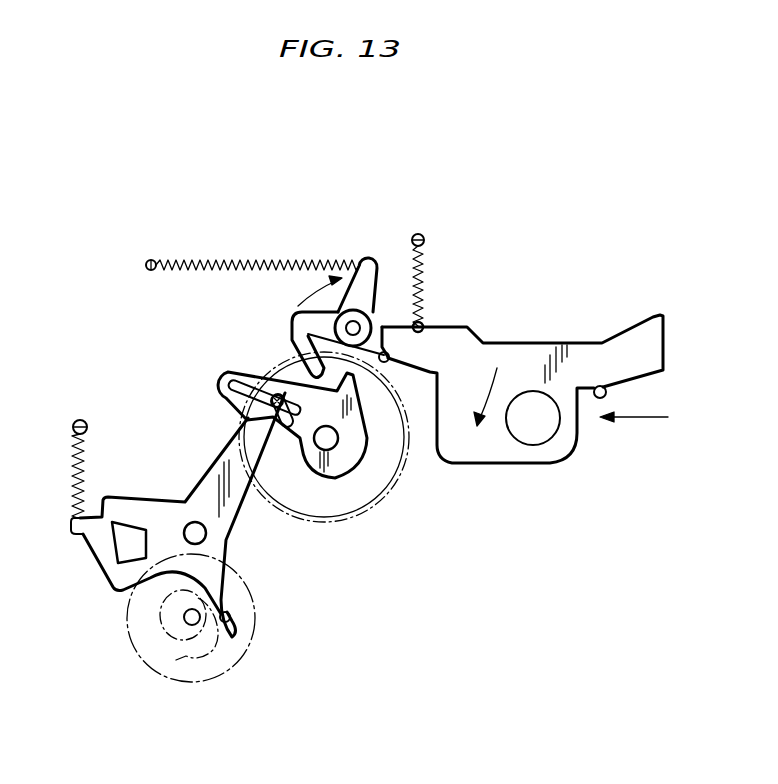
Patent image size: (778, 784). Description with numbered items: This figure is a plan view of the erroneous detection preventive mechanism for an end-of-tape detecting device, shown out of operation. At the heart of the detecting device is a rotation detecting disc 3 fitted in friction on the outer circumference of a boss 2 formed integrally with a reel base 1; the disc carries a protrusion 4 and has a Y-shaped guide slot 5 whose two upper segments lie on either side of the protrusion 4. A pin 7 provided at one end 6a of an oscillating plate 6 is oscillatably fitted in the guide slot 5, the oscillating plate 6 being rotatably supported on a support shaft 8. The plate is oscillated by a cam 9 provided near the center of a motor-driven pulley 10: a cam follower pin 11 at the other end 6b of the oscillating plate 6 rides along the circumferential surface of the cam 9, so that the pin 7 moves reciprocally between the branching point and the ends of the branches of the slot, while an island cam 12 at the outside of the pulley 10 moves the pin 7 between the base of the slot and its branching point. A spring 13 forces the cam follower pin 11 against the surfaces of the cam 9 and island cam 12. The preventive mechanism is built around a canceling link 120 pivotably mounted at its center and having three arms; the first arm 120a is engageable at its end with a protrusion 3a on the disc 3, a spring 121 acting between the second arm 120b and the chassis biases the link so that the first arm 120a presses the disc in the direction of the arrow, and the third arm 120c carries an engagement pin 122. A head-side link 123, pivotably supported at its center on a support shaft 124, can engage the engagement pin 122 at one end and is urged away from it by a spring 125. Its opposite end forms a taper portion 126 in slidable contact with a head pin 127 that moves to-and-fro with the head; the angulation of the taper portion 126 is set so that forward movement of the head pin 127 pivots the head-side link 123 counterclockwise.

The reel base 1 is at (328, 508).
The boss 2 is at (337, 450).
The rotation detecting disc 3 is at (226, 396).
The protrusion 3a is at (352, 388).
The protrusion 4 is at (302, 458).
The Y-shaped guide slot 5 is at (242, 373).
The oscillating plate 6 is at (217, 497).
The one end of the oscillating plate 6a is at (237, 497).
The other end of the oscillating plate 6b is at (218, 592).
The pin 7 is at (277, 394).
The support shaft 8 is at (190, 522).
The cam 9 is at (137, 632).
The pulley 10 is at (188, 674).
The cam follower pin 11 is at (229, 620).
The island cam 12 is at (222, 643).
The spring 13 is at (86, 460).
The canceling link 120 is at (372, 296).
The first arm 120a is at (291, 328).
The second arm 120b is at (367, 286).
The third arm 120c is at (393, 352).
The spring 121 is at (287, 258).
The engagement pin 122 is at (395, 354).
The head-side link 123 is at (541, 360).
The support shaft 124 is at (531, 442).
The spring 125 is at (424, 262).
The taper portion 126 is at (629, 368).
The head pin 127 is at (594, 400).